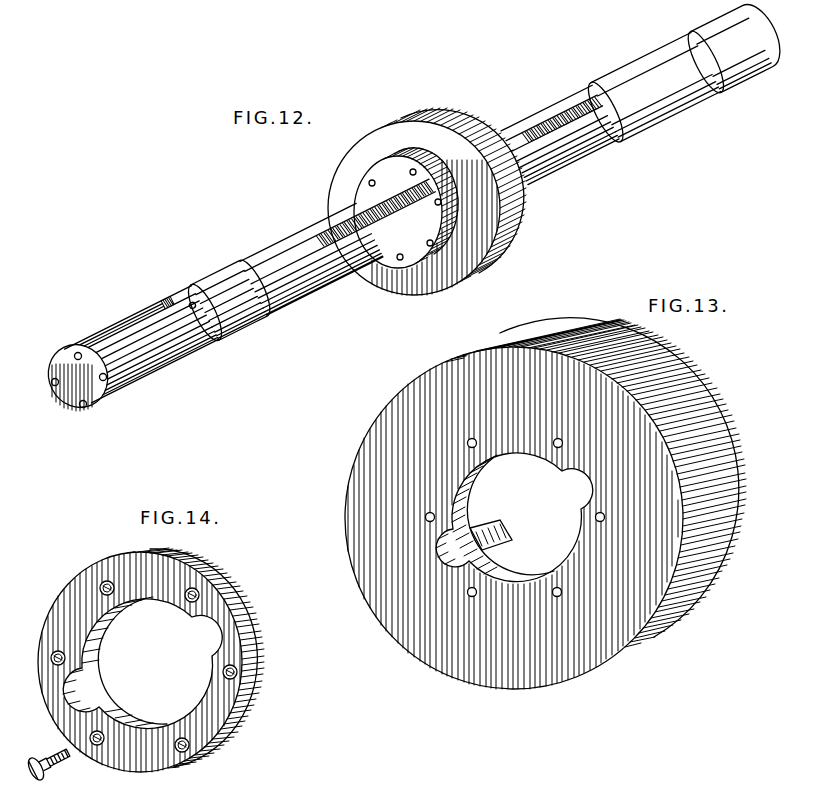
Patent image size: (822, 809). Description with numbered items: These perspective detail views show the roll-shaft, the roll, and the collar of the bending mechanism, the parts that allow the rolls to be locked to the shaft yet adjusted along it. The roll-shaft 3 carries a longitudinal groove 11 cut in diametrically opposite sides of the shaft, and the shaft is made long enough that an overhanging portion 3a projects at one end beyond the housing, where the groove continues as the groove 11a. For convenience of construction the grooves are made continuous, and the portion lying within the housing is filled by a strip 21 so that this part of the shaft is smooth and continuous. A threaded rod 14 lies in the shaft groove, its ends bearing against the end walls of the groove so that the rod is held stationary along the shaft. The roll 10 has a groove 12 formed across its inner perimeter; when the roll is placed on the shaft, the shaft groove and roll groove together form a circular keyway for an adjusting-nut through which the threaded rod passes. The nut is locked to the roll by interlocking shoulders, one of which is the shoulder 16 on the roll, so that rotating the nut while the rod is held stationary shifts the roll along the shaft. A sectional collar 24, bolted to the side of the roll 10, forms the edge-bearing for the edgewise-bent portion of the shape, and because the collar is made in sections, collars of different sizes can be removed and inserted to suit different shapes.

In FIG. 12, the roll-shaft 3 is at (686, 73).
In FIG. 12, the overhanging portion of the shaft 3a is at (140, 383).
In FIG. 12, the roll 10 is at (418, 120).
In FIG. 13, the roll 10 is at (545, 503).
In FIG. 12, the longitudinal groove 11 is at (343, 280).
In FIG. 12, the longitudinal groove 11a is at (133, 320).
In FIG. 13, the groove 12 is at (505, 532).
In FIG. 12, the threaded rod 14 is at (320, 222).
In FIG. 13, the interlocking shoulder 16 is at (487, 545).
In FIG. 12, the filling strip 21 is at (260, 267).
In FIG. 12, the collar 24 is at (410, 167).
In FIG. 14, the collar 24 is at (210, 582).